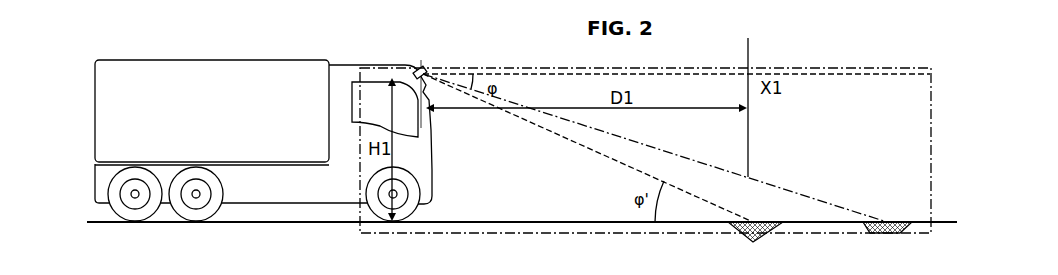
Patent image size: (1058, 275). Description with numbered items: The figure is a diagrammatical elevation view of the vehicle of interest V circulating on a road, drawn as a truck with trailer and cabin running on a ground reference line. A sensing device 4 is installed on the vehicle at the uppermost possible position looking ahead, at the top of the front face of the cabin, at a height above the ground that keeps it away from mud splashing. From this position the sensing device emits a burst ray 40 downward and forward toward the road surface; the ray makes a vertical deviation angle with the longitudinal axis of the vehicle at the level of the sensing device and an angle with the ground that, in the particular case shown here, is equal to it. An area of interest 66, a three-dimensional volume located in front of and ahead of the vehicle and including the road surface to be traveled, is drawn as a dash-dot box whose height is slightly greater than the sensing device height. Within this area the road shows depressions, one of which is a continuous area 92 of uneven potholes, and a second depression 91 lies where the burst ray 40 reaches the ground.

The vehicle V is at (90, 111).
The sensing device 4 is at (423, 67).
The burst ray 40 is at (575, 143).
The area of interest 66 is at (860, 67).
The pothole / road depression 91 is at (772, 215).
The continuous area of uneven potholes 92 is at (891, 214).